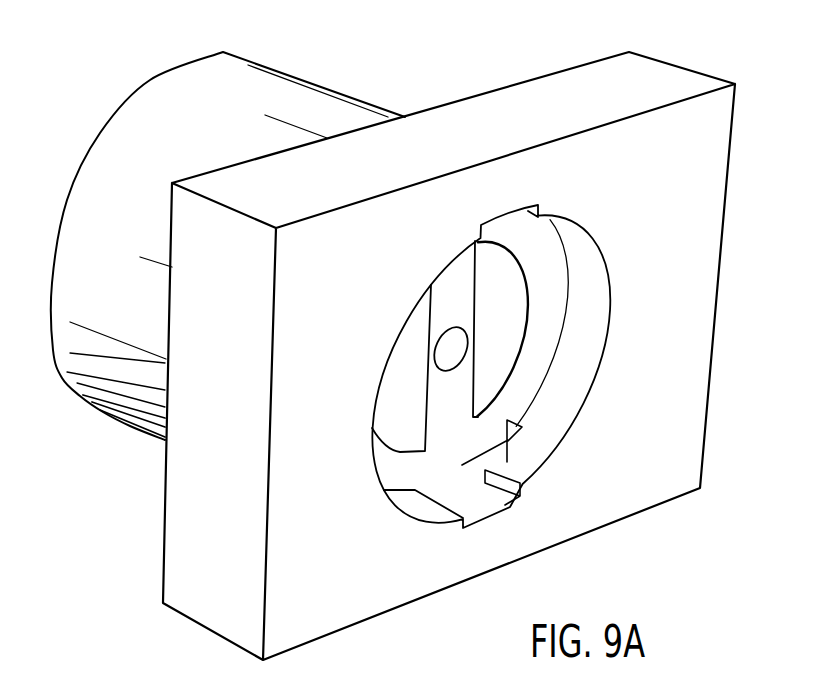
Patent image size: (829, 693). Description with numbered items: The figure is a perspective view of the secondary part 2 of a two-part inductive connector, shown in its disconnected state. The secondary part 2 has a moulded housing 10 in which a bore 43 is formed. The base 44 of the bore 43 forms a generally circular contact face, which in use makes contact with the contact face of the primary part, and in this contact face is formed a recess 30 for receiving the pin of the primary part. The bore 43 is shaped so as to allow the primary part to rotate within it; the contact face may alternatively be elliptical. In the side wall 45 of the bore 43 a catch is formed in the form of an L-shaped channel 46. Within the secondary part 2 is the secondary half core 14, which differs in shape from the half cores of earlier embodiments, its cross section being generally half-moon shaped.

The secondary part 2 is at (708, 157).
The housing 10 is at (190, 528).
The secondary half core 14 is at (514, 292).
The recess 30 is at (450, 338).
The bore 43 is at (572, 397).
The base 44 is at (443, 455).
The side wall 45 is at (425, 523).
The L-shaped channel 46 is at (463, 468).